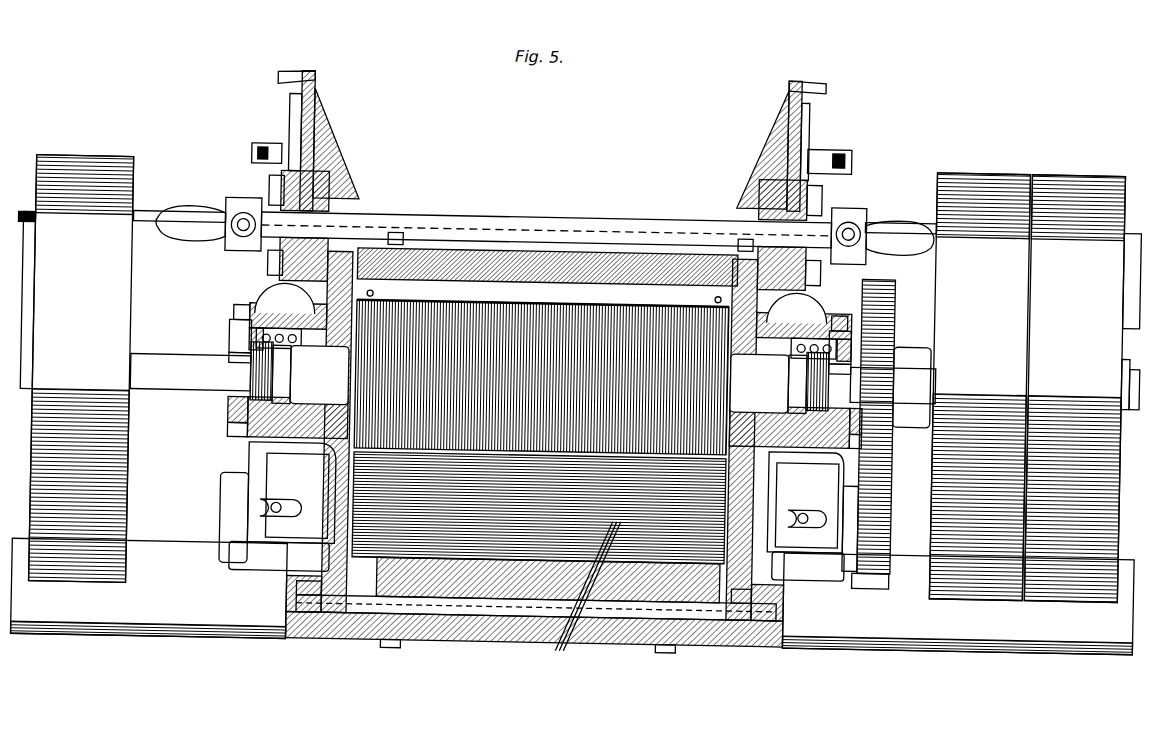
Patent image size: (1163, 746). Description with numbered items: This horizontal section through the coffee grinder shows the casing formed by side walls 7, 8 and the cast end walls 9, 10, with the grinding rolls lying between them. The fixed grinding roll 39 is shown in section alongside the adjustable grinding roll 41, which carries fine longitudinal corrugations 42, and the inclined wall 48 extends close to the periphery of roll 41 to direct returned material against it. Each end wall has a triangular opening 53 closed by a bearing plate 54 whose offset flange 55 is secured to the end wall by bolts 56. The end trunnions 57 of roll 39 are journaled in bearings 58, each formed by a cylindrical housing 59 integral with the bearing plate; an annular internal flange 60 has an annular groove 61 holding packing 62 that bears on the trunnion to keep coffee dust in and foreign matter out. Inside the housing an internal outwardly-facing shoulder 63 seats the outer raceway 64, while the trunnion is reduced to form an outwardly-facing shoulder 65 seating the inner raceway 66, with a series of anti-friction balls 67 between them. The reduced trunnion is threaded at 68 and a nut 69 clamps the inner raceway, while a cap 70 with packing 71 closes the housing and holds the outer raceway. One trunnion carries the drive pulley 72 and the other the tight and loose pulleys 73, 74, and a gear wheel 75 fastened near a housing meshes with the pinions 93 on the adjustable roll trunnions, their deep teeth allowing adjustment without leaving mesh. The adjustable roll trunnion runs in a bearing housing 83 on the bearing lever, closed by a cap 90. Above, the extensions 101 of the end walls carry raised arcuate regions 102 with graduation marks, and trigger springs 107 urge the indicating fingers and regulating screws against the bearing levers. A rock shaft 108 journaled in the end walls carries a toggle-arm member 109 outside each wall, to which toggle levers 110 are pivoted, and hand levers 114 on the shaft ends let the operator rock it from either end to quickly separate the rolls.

The side wall 7 is at (468, 258).
The side wall 8 is at (528, 634).
The end wall 9 is at (250, 446).
The end wall 10 is at (775, 463).
The grinding roll 39 is at (530, 293).
The grinding roll 41 is at (507, 540).
The longitudinal corrugations 42 is at (575, 598).
The inclined wall 48 is at (660, 570).
The triangular opening 53 is at (392, 226).
The bearing plate 54 is at (318, 483).
The offset flange 55 is at (312, 608).
The bolt 56 is at (300, 580).
The end trunnion 57 is at (962, 339).
The bearing 58 is at (262, 300).
The cylindrical housing 59 is at (376, 293).
The annular internal flange 60 is at (539, 379).
The annular groove 61 is at (835, 275).
The packing 62 is at (539, 380).
The internal outwardly-facing shoulder 63 is at (541, 303).
The outer raceway 64 is at (236, 305).
The outwardly-facing shoulder 65 is at (258, 380).
The inner raceway 66 is at (240, 400).
The anti-friction balls 67 is at (248, 330).
The threaded portion 68 is at (250, 360).
The nut 69 is at (230, 330).
The cap 70 is at (230, 415).
The packing 71 is at (230, 350).
The drive pulley 72 is at (130, 476).
The tight pulley 73 is at (985, 162).
The loose pulley 74 is at (1068, 160).
The gear wheel 75 is at (878, 275).
The bearing housing 83 is at (265, 540).
The cap 90 is at (236, 478).
The pinion 93 is at (880, 563).
The extension 101 is at (322, 148).
The raised arcuate region 102 is at (294, 112).
The trigger spring 107 is at (258, 138).
The rock shaft 108 is at (622, 216).
The toggle-arm member 109 is at (355, 192).
The toggle lever 110 is at (265, 178).
The hand lever 114 is at (222, 204).